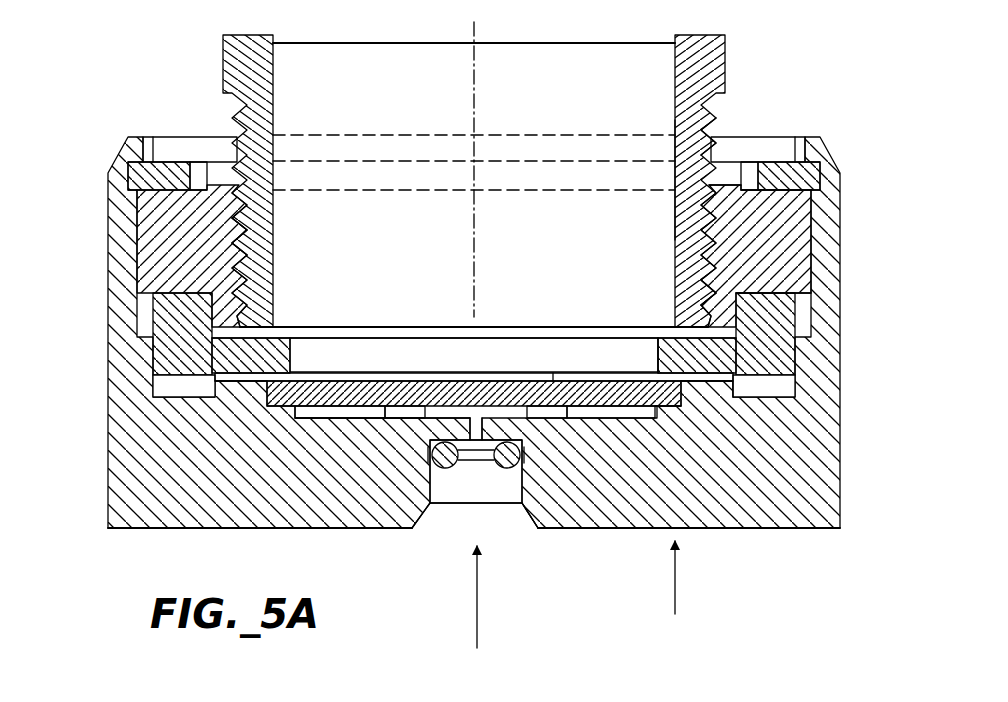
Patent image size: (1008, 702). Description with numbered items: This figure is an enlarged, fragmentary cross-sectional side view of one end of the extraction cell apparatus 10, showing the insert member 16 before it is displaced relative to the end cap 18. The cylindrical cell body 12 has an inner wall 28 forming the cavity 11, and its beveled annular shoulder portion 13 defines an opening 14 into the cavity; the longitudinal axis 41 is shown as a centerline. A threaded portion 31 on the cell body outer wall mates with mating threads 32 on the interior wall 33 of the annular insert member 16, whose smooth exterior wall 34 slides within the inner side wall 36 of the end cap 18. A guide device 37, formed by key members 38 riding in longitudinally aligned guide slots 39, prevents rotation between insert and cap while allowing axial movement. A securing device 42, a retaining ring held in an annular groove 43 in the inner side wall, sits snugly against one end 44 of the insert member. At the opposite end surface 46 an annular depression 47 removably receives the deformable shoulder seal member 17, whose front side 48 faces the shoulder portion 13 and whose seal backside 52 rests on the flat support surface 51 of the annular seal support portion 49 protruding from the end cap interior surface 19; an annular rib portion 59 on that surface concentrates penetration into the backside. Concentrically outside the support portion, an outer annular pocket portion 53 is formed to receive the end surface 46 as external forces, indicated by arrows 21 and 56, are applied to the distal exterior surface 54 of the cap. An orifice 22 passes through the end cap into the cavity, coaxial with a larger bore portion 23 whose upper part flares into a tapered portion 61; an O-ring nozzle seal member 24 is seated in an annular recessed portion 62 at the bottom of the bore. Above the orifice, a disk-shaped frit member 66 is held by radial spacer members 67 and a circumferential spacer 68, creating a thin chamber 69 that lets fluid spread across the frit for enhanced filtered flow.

The extraction cell apparatus 10 is at (802, 52).
The cavity 11 is at (570, 225).
The cell body 12 is at (702, 31).
The shoulder portion 13 is at (735, 405).
The opening 14 is at (530, 310).
The insert member 16 is at (731, 180).
The shoulder seal member 17 is at (208, 352).
The end cap 18 is at (104, 484).
The interior surface 19 is at (333, 378).
The arrow 21 is at (676, 562).
The orifice 22 is at (406, 522).
The bore portion 23 is at (440, 506).
The nozzle seal member 24 is at (458, 470).
The inner wall 28 is at (250, 282).
The threaded portion 31 is at (718, 126).
The mating threads 32 is at (675, 234).
The interior wall 33 is at (274, 234).
The exterior wall 34 is at (800, 296).
The inner side wall 36 is at (702, 292).
The guide device 37 is at (830, 234).
The key members 38 is at (812, 200).
The guide slots 39 is at (798, 316).
The axis 41 is at (476, 26).
The securing device 42 is at (192, 158).
The annular groove 43 is at (768, 175).
The end 44 is at (200, 178).
The end surface 46 is at (185, 388).
The annular depression 47 is at (258, 342).
The front side 48 is at (690, 346).
The seal support portion 49 is at (742, 398).
The support surface 51 is at (722, 353).
The seal backside 52 is at (235, 378).
The pocket portion 53 is at (778, 386).
The exterior surface 54 is at (300, 528).
The arrow 56 is at (478, 586).
The annular rib portion 59 is at (310, 352).
The tapered portion 61 is at (530, 516).
The annular recessed portion 62 is at (494, 492).
The frit member 66 is at (553, 383).
The spacer members 67 is at (484, 385).
The circumferential spacer 68 is at (668, 400).
The chamber 69 is at (620, 418).